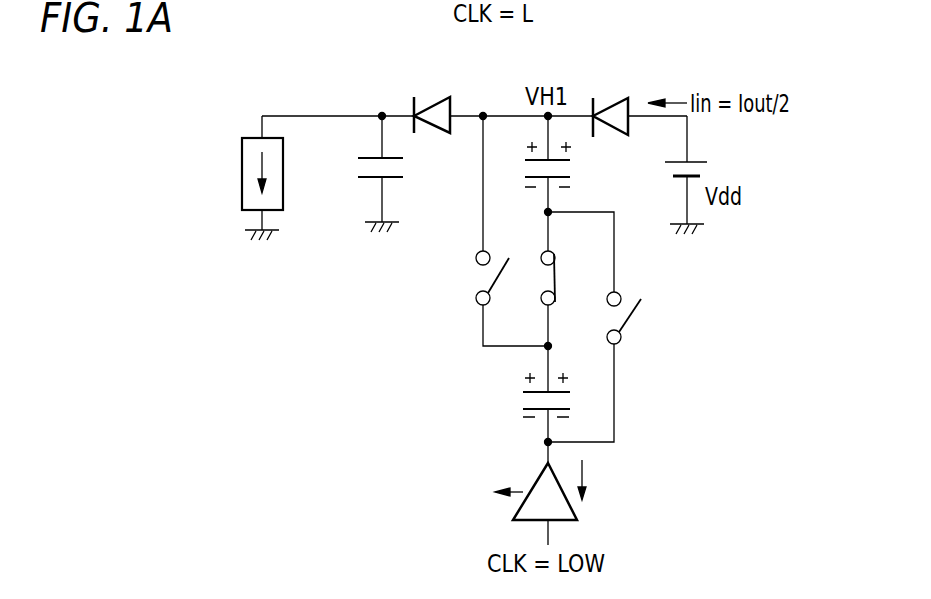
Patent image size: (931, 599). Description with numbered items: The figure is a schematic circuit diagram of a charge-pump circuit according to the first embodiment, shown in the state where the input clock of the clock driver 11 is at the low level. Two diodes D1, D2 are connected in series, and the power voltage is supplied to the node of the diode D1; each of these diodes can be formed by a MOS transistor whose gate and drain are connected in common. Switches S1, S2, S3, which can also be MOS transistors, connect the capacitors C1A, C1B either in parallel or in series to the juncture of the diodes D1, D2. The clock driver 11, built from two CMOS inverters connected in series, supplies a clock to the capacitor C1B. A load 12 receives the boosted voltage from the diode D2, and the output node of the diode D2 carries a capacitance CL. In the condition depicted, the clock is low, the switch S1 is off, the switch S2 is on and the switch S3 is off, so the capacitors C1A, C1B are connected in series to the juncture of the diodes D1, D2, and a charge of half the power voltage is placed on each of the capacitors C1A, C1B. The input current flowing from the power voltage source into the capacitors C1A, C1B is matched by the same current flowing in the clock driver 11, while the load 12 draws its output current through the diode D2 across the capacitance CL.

The clock driver 11 is at (570, 507).
The load 12 is at (283, 170).
The diode D1 is at (619, 98).
The diode D2 is at (438, 96).
The capacitor C1A is at (523, 173).
The capacitor C1B is at (517, 403).
The capacitance CL is at (396, 174).
The switch S1 is at (497, 231).
The switch S2 is at (563, 279).
The switch S3 is at (602, 327).